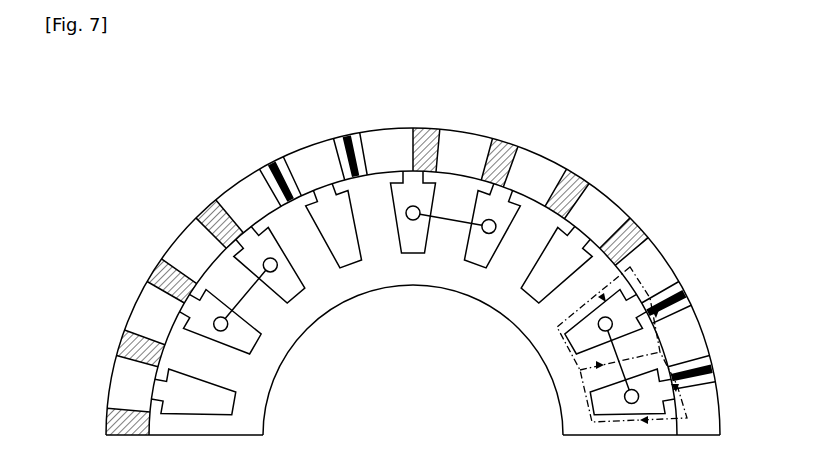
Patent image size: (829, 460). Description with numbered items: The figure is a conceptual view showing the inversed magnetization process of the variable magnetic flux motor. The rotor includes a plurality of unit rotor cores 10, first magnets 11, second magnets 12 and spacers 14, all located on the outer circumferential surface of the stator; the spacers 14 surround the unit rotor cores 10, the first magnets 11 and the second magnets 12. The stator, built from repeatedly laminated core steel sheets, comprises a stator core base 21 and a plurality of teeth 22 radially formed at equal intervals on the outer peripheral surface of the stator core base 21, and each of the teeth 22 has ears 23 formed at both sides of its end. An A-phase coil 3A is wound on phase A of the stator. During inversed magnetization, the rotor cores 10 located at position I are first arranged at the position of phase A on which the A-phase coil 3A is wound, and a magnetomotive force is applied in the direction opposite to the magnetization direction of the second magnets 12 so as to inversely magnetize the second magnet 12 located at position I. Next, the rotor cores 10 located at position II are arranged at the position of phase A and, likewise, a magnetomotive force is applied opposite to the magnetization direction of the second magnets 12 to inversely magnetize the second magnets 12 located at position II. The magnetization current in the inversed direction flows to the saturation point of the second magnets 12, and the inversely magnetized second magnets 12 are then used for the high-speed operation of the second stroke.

The unit rotor core 10 is at (190, 253).
The first magnet 11 is at (152, 285).
The second magnet 12 is at (272, 186).
The spacer 14 is at (285, 193).
The stator core base 21 is at (432, 270).
The tooth 22 is at (510, 263).
The ear 23 is at (519, 178).
The A-phase coil 3A is at (452, 218).
The position I is at (639, 345).
The position II is at (322, 190).